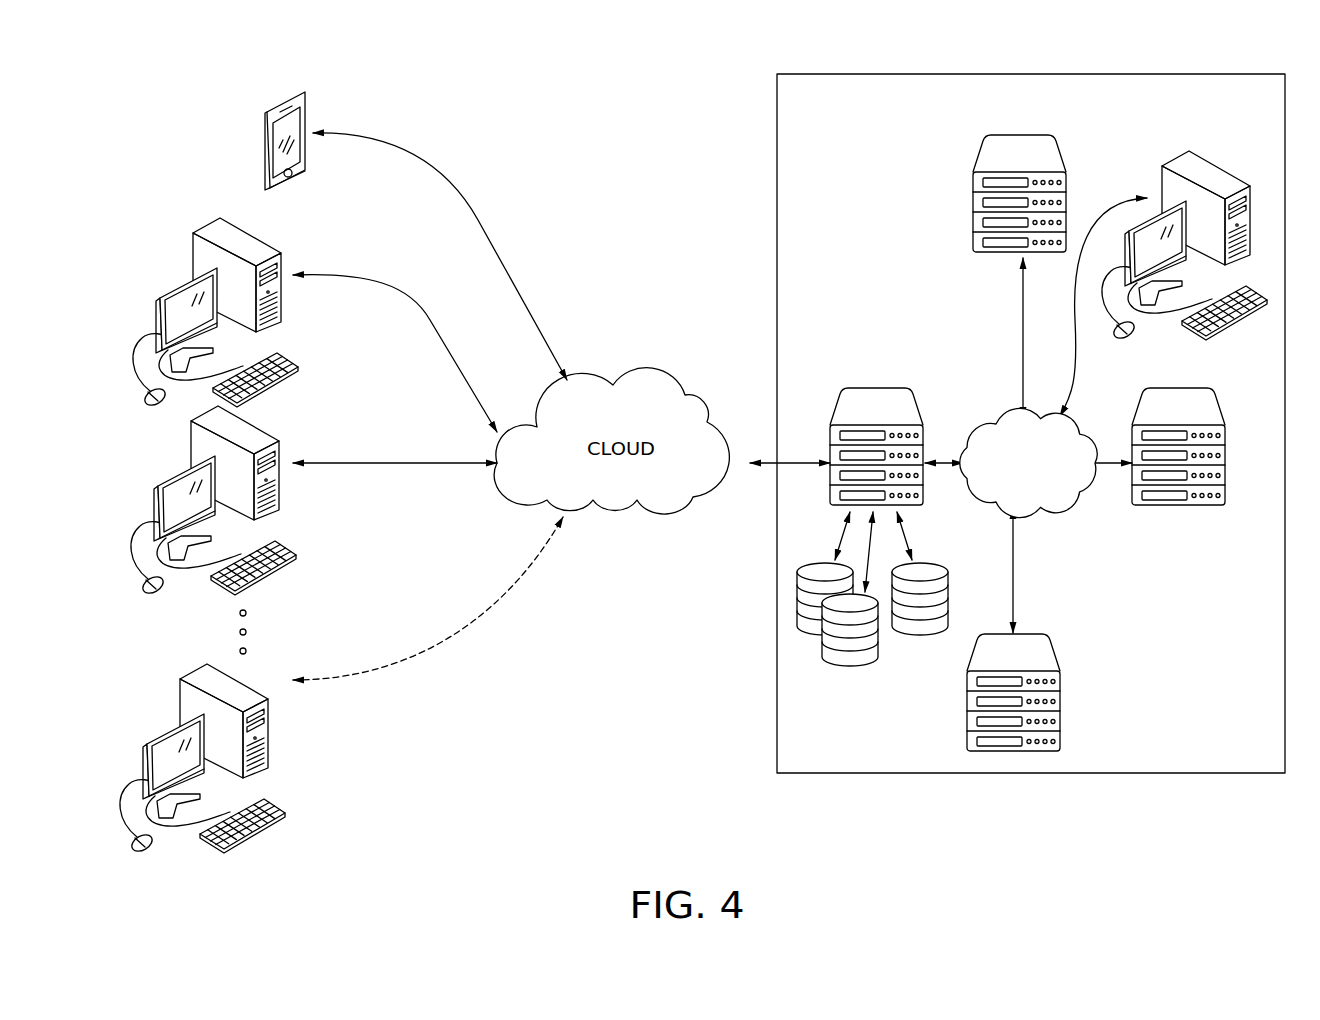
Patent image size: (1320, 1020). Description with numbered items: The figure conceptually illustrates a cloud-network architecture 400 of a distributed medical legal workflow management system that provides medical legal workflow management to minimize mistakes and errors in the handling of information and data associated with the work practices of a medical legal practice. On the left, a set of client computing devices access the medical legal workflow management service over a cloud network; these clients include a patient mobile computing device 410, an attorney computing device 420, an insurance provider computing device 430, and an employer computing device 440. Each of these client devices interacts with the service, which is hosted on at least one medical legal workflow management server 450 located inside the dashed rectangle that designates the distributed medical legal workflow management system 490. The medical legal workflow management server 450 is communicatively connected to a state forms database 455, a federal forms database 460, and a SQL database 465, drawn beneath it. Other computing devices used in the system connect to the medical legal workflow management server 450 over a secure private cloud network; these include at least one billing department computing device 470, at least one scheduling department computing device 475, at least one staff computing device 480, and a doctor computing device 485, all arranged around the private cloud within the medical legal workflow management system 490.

The cloud-network architecture 400 is at (592, 58).
The patient mobile computing device 410 is at (265, 122).
The attorney computing device 420 is at (192, 240).
The insurance provider computing device 430 is at (191, 445).
The employer computing device 440 is at (180, 690).
The medical legal workflow management server 450 is at (857, 424).
The state forms database 455 is at (815, 636).
The federal forms database 460 is at (855, 667).
The SQL database 465 is at (929, 636).
The billing department computing device 470 is at (1000, 169).
The scheduling department computing device 475 is at (995, 667).
The staff computing device 480 is at (1160, 424).
The doctor computing device 485 is at (1222, 178).
The medical legal workflow management system 490 is at (862, 74).